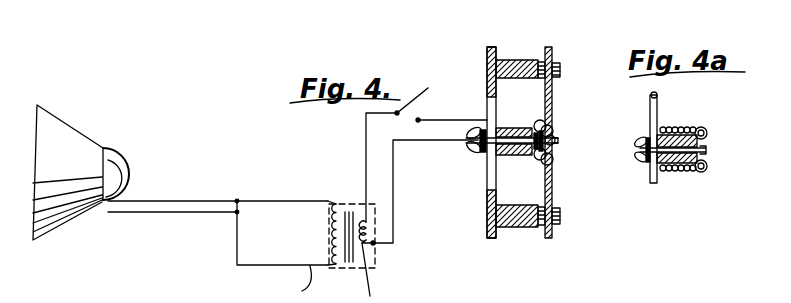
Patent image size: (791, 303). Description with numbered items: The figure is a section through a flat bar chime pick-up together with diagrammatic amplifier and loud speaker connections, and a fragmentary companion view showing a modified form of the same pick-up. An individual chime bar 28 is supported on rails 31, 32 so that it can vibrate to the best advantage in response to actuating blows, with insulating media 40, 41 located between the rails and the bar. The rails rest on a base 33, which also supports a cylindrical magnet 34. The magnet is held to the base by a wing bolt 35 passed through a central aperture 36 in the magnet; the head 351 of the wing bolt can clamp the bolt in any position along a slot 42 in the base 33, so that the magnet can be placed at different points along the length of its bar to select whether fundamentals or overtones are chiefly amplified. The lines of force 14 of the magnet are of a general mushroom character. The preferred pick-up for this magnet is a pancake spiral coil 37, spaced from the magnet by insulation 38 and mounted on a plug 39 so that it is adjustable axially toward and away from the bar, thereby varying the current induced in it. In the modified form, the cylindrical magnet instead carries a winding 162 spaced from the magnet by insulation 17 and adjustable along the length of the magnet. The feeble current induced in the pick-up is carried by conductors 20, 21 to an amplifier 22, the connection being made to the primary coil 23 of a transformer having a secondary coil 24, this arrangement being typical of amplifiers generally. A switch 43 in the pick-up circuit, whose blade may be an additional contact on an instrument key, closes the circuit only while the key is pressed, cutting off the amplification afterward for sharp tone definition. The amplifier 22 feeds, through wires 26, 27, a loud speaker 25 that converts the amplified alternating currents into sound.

In FIG. 4, the loud speaker 25 is at (70, 148).
In FIG. 4, the wire 26 is at (173, 197).
In FIG. 4, the wire 27 is at (182, 213).
In FIG. 4, the amplifier 22 is at (263, 220).
In FIG. 4, the secondary coil 24 is at (338, 210).
In FIG. 4, the conductor 20 is at (366, 140).
In FIG. 4, the conductor 21 is at (433, 143).
In FIG. 4, the primary coil 23 is at (376, 273).
In FIG. 4, the switch 43 is at (419, 93).
In FIG. 4, the slot 42 is at (487, 106).
In FIG. 4A, the slot 42 is at (650, 113).
In FIG. 4, the base 33 is at (487, 63).
In FIG. 4A, the base 33 is at (657, 94).
In FIG. 4, the chime bar 28 is at (553, 102).
In FIG. 4, the rail 31 is at (512, 70).
In FIG. 4, the rail 32 is at (505, 230).
In FIG. 4, the magnet 34 is at (506, 157).
In FIG. 4A, the magnet 34 is at (704, 135).
In FIG. 4, the insulating medium 40 is at (548, 62).
In FIG. 4, the insulating medium 41 is at (560, 70).
In FIG. 4, the wing bolt 35 is at (502, 137).
In FIG. 4A, the wing bolt 35 is at (664, 138).
In FIG. 4, the head of the wing bolt 351 is at (473, 157).
In FIG. 4A, the head of the wing bolt 351 is at (643, 153).
In FIG. 4, the plug 39 is at (556, 142).
In FIG. 4A, the plug 39 is at (640, 149).
In FIG. 4, the insulation 38 is at (556, 136).
In FIG. 4, the pancake spiral coil 37 is at (556, 148).
In FIG. 4, the central aperture 36 is at (548, 178).
In FIG. 4A, the central aperture 36 is at (707, 165).
In FIG. 4, the lines of force 14 is at (554, 158).
In FIG. 4A, the lines of force 14 is at (702, 150).
In FIG. 4A, the winding 162 is at (672, 173).
In FIG. 4A, the insulation 17 is at (667, 173).